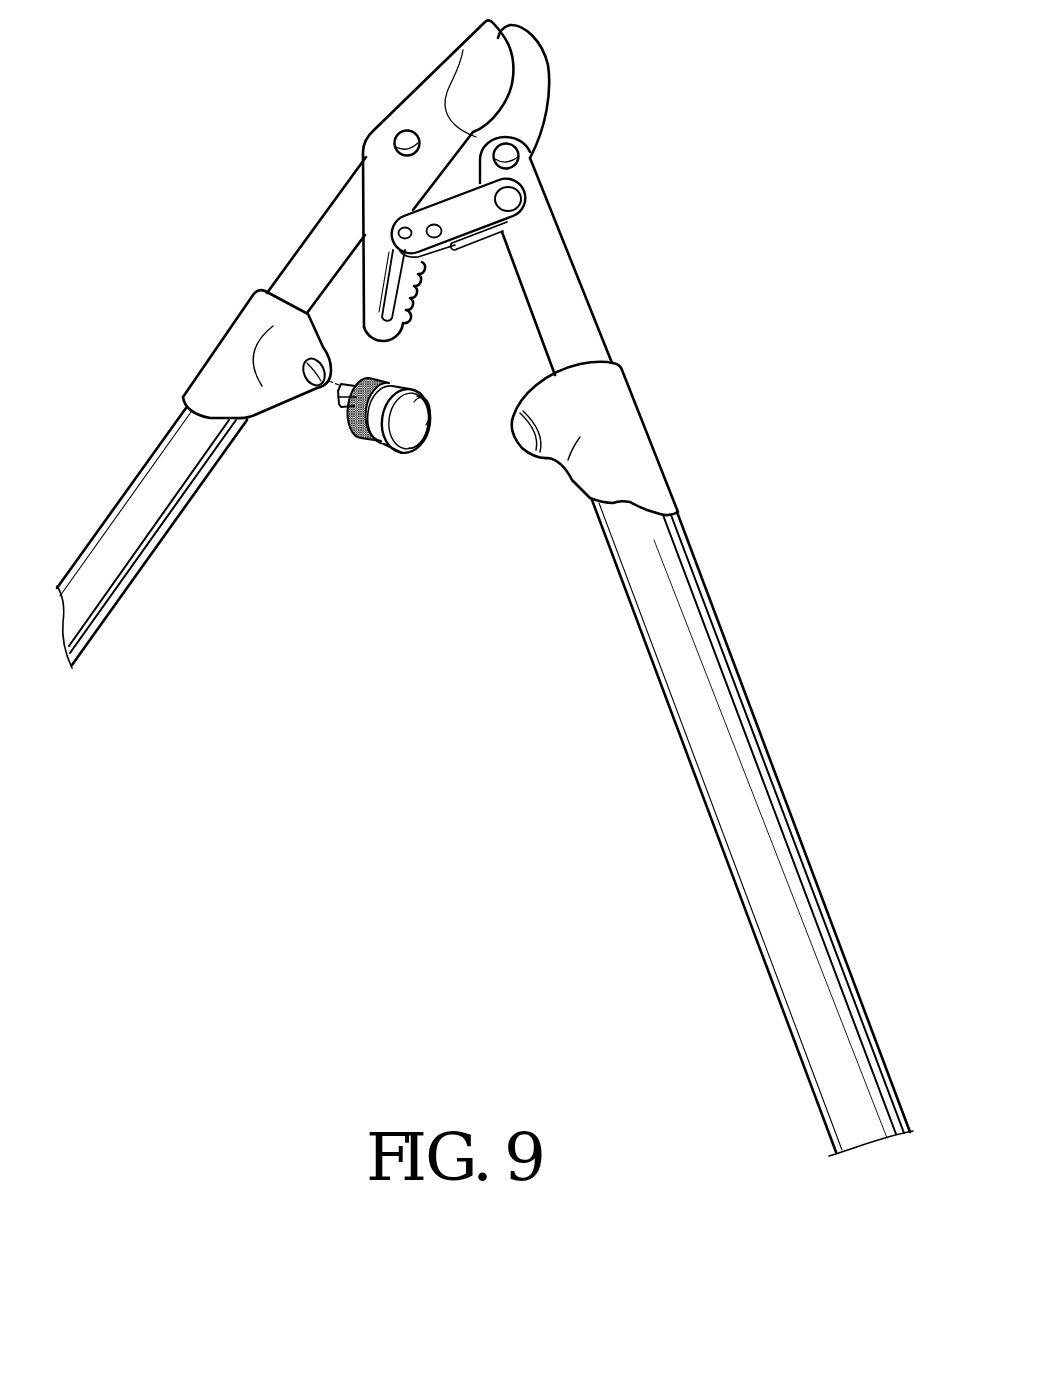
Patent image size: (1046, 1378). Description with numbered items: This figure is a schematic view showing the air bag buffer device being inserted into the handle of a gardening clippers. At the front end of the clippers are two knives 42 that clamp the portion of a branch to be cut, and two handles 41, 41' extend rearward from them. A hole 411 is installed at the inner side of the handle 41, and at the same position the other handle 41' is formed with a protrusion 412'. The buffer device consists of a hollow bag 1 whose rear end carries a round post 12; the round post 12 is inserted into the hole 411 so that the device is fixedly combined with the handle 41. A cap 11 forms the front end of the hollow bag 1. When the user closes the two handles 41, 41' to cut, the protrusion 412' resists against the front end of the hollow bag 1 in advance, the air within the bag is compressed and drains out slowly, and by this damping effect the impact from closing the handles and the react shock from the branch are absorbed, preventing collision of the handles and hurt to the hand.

The hollow bag 1 is at (358, 470).
The knob cap 11 is at (408, 436).
The round post 12 is at (340, 411).
The handle 41 is at (152, 538).
The another handle 41' is at (752, 828).
The hole 411 is at (330, 371).
The protrusion 412' is at (584, 474).
The knives 42 is at (476, 81).